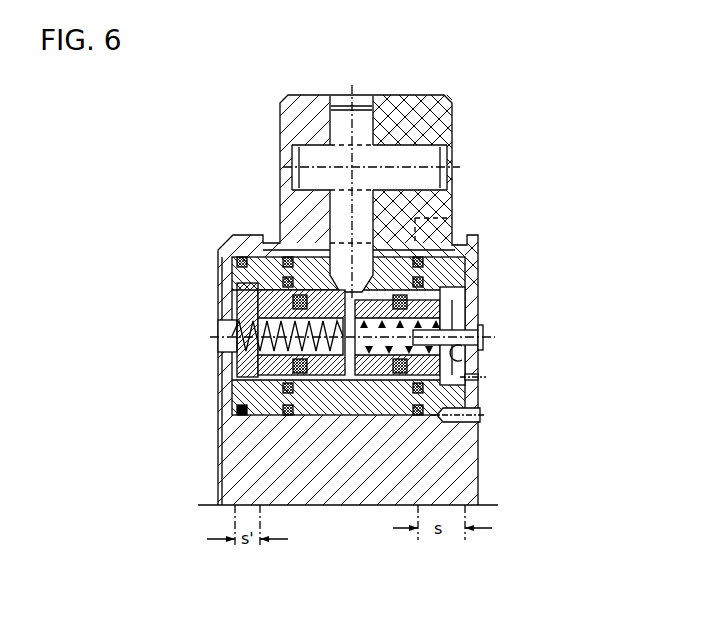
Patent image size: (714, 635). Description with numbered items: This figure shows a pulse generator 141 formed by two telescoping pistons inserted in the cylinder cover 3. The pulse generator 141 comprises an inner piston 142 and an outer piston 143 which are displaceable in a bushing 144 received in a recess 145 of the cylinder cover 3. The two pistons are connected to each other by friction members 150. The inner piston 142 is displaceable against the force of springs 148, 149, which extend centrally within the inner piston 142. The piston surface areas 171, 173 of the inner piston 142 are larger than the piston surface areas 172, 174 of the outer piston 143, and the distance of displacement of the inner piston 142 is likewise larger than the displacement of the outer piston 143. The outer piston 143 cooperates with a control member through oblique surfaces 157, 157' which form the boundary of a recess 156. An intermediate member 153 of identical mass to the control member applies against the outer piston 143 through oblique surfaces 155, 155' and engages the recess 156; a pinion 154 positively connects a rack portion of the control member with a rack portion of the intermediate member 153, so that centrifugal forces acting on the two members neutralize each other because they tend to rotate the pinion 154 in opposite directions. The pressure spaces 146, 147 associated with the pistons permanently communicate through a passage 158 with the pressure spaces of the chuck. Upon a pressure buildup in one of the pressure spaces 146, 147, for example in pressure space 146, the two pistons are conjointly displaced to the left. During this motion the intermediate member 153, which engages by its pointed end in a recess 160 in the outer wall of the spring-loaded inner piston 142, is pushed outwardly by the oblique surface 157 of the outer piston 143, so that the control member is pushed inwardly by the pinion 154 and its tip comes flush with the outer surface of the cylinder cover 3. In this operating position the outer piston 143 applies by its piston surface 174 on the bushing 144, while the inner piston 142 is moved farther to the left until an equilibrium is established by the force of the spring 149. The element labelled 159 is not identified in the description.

The cylinder cover 3 is at (290, 217).
The pulse generator 141 is at (196, 390).
The inner piston 142 is at (333, 383).
The outer piston 143 is at (385, 383).
The bushing 144 is at (470, 275).
The recess 145 is at (472, 244).
The pressure space 146 is at (470, 395).
The pressure space 147 is at (222, 380).
The spring 148 is at (468, 358).
The spring 149 is at (246, 345).
The friction members 150 is at (298, 390).
The intermediate member 153 is at (340, 120).
The pinion 154 is at (427, 153).
The oblique surface 155 is at (476, 212).
The oblique surface 155' is at (172, 255).
The recess 156 is at (352, 290).
The oblique surface 157 is at (431, 162).
The oblique surface 157' is at (267, 192).
The passage 158 is at (478, 377).
The hidden channel 159 is at (450, 206).
The recess 160 is at (283, 236).
The piston surface area 171 is at (470, 305).
The piston surface area 172 is at (440, 292).
The piston surface area 173 is at (237, 308).
The piston surface 174 is at (257, 294).